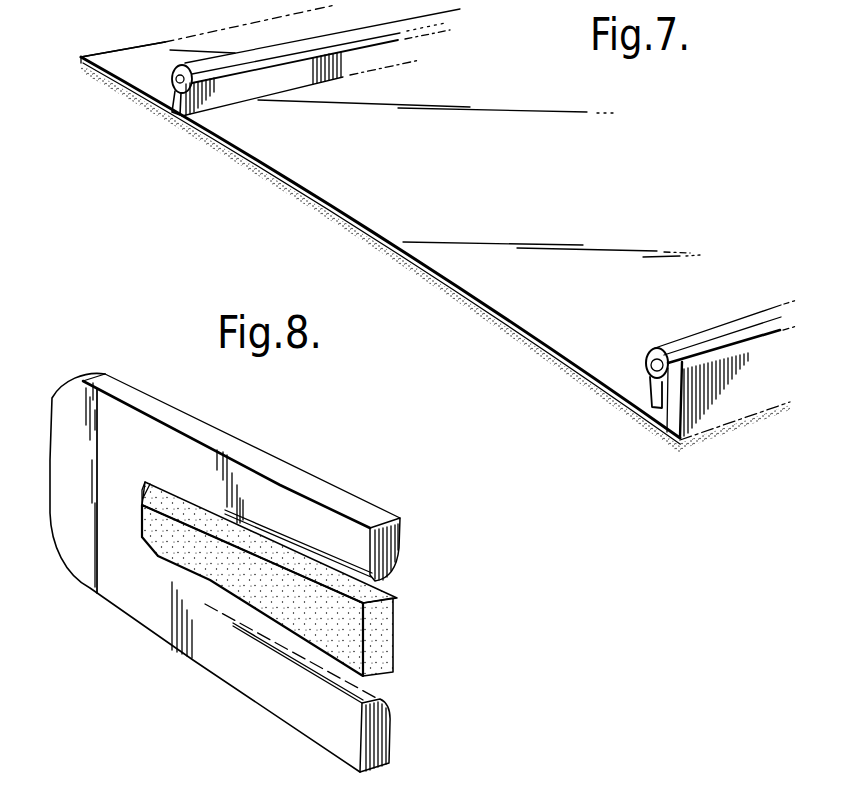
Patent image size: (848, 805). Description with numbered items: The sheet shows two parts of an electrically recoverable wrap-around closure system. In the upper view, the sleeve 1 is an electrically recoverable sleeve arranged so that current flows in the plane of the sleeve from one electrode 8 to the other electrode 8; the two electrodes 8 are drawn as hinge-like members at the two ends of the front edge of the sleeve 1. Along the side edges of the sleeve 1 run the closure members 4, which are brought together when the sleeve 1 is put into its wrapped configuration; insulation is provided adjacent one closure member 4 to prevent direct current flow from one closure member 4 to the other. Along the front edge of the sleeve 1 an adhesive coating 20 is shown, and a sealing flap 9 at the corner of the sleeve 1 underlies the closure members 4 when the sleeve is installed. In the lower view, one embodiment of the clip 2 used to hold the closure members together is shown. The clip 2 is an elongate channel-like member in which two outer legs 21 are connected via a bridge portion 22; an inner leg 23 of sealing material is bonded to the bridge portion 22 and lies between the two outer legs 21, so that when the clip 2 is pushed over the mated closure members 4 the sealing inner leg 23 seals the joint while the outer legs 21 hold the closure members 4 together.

In FIG. 7, the sleeve 1 is at (530, 189).
In FIG. 7, the closure member 4 is at (365, 33).
In FIG. 7, the electrode 8 is at (177, 83).
In FIG. 7, the sealing flap 9 is at (150, 61).
In FIG. 7, the adhesive coating 20 is at (351, 225).
In FIG. 8, the clip 2 is at (48, 481).
In FIG. 8, the outer leg 21 is at (340, 498).
In FIG. 8, the bridge portion 22 is at (103, 538).
In FIG. 8, the inner leg 23 is at (392, 638).